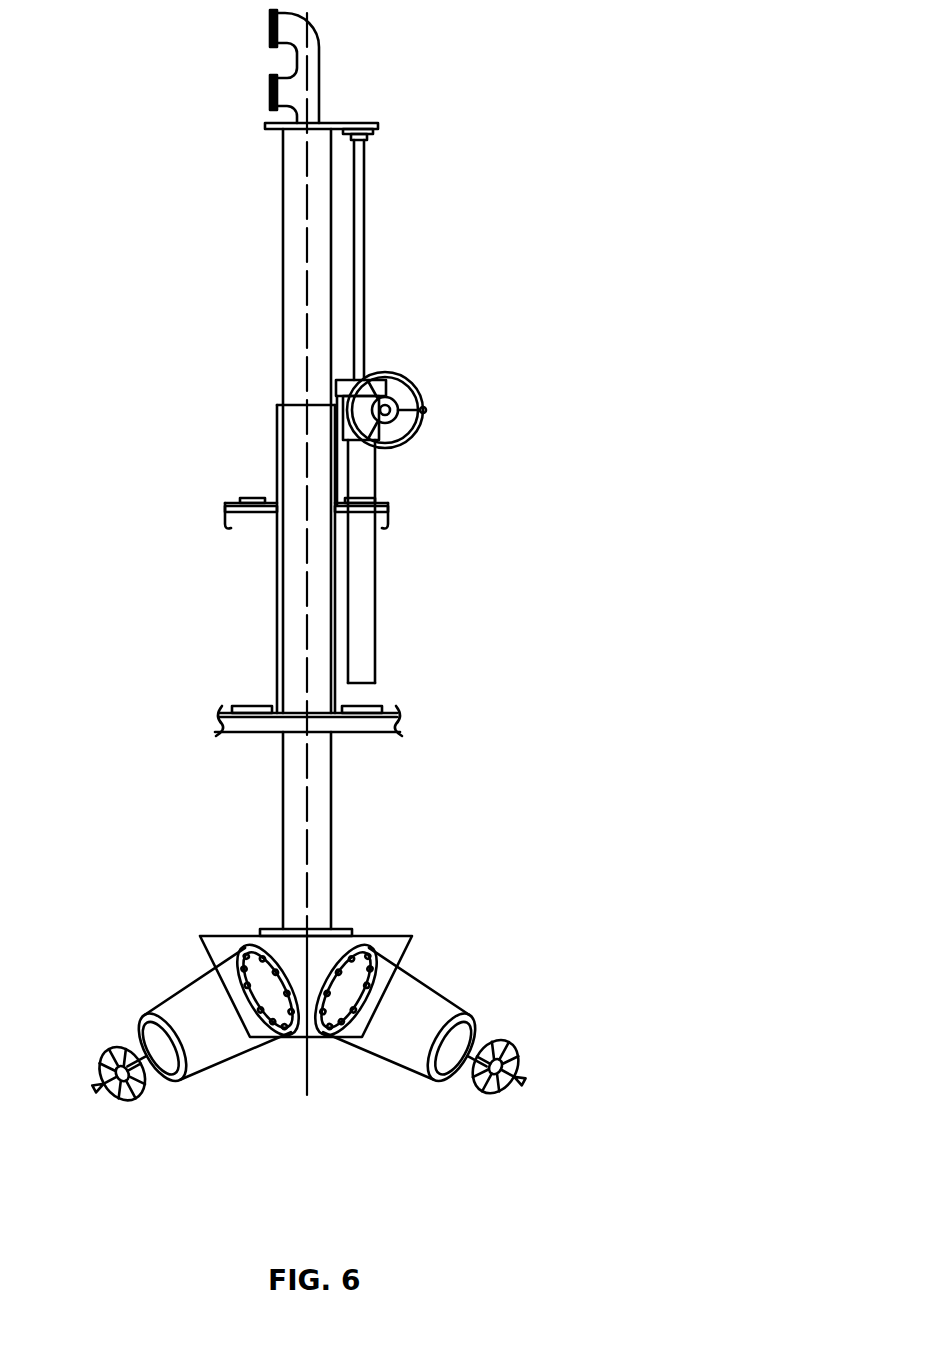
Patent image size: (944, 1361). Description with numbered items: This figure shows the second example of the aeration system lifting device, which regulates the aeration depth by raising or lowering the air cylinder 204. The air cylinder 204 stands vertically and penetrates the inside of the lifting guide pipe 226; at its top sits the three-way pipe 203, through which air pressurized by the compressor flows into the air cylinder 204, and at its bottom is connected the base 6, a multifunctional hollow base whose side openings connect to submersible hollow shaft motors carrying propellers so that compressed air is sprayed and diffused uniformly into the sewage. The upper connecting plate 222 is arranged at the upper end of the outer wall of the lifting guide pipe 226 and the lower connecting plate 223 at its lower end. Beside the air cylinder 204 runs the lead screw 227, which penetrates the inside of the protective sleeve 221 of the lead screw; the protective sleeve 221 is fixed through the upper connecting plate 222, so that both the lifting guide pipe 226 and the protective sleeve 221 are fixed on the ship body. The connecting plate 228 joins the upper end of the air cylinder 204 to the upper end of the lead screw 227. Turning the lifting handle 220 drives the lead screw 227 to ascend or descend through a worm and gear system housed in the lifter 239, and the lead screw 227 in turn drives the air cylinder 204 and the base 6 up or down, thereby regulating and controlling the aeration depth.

The three-way pipe 203 is at (437, 76).
The connecting plate 228 is at (468, 189).
The lead screw 227 is at (468, 260).
The lifter 239 is at (240, 364).
The lifting handle 220 is at (468, 412).
The upper connecting plate 222 is at (415, 543).
The lifting guide pipe 226 is at (198, 559).
The protective sleeve of the lead screw 221 is at (476, 562).
The lower connecting plate 223 is at (410, 758).
The air cylinder 204 is at (444, 830).
The base 6 is at (336, 1049).